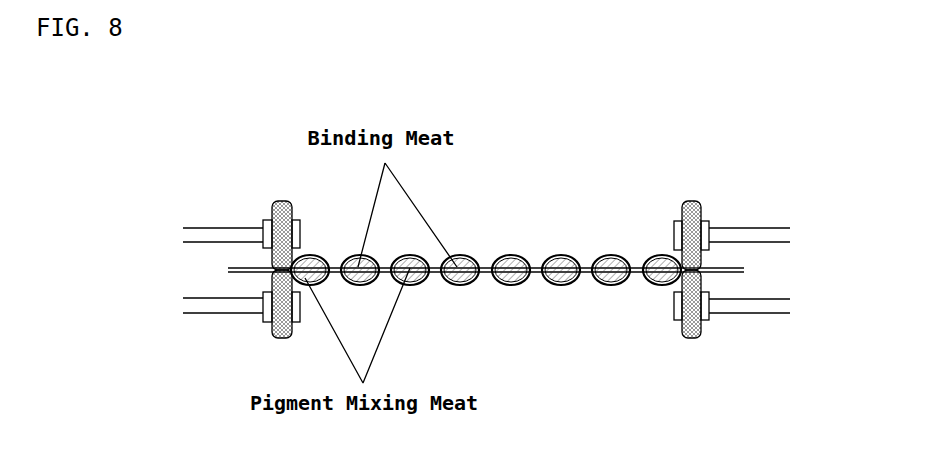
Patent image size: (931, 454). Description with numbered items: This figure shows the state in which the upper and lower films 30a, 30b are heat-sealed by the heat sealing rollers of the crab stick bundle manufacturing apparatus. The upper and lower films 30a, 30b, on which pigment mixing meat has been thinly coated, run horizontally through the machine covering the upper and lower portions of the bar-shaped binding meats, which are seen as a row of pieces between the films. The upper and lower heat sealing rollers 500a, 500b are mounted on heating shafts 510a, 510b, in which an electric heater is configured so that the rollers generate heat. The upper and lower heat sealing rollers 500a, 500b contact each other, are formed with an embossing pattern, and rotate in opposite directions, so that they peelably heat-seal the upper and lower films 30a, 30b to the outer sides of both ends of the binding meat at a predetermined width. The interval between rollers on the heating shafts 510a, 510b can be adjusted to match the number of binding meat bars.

The upper film 30a is at (242, 268).
The lower film 30b is at (232, 274).
The upper heat sealing roller 500a is at (692, 202).
The lower heat sealing roller 500b is at (692, 338).
The upper heating shaft 510a is at (750, 232).
The lower heating shaft 510b is at (755, 308).